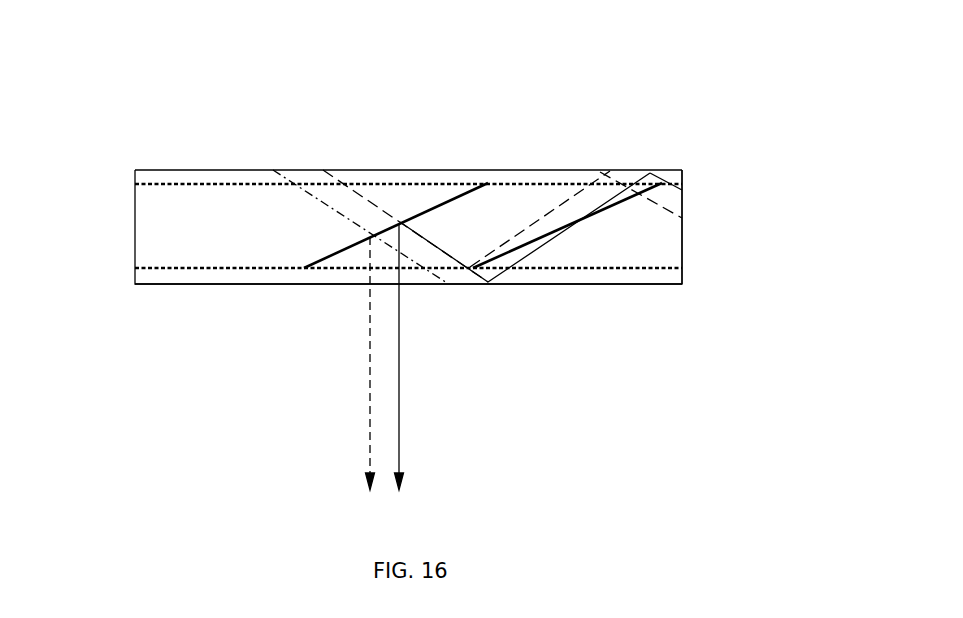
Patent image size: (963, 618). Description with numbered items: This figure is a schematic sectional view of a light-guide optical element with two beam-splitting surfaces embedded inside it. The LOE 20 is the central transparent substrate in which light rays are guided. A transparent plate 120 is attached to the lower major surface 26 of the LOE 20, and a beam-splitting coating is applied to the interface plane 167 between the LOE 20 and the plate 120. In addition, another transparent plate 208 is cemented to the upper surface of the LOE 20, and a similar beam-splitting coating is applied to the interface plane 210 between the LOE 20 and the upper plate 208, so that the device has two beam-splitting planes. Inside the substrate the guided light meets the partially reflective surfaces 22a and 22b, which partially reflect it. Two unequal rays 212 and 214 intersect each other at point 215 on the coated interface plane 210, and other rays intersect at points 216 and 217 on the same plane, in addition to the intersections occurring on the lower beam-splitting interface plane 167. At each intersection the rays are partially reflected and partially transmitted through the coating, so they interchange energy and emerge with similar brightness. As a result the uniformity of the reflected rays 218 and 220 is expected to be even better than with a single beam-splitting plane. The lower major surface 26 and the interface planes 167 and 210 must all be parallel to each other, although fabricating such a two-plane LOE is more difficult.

The light-guide optical element 20 is at (223, 203).
The transparent plate 208 is at (173, 184).
The interface plane 210 is at (128, 188).
The interface plane 167 is at (128, 272).
The partially reflective surface 22b is at (438, 198).
The first partially reflective surface 22a is at (560, 232).
The transparent plate 120 is at (560, 274).
The intersection point 215 is at (637, 182).
The light ray 214 is at (682, 190).
The intersection point 217 is at (588, 190).
The light ray 212 is at (682, 220).
The intersection point 216 is at (673, 180).
The lower major surface 26 is at (658, 285).
The reflected ray 220 is at (347, 372).
The reflected ray 218 is at (415, 365).